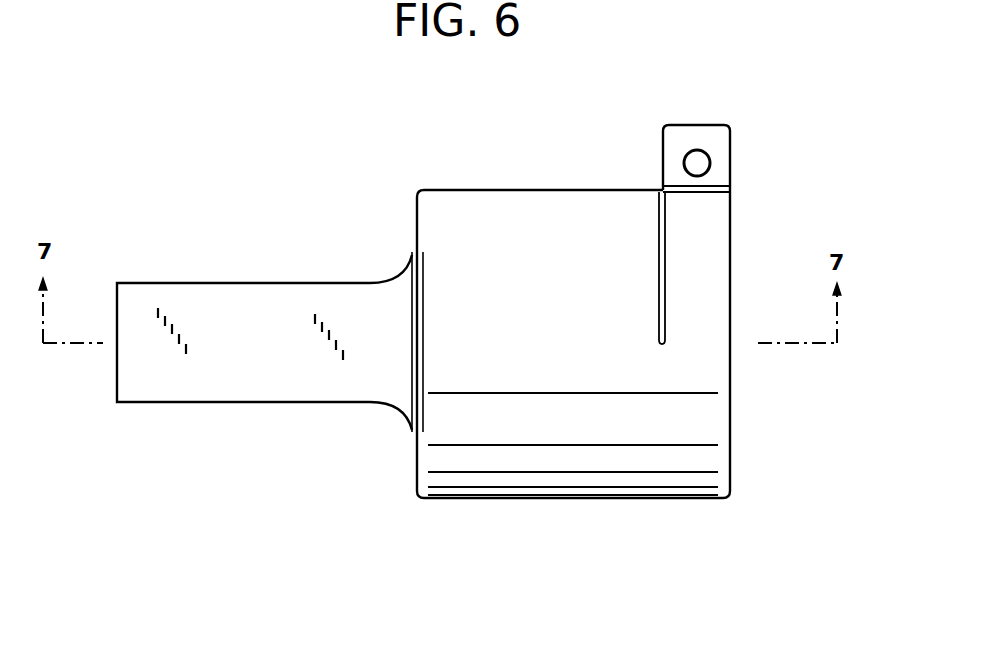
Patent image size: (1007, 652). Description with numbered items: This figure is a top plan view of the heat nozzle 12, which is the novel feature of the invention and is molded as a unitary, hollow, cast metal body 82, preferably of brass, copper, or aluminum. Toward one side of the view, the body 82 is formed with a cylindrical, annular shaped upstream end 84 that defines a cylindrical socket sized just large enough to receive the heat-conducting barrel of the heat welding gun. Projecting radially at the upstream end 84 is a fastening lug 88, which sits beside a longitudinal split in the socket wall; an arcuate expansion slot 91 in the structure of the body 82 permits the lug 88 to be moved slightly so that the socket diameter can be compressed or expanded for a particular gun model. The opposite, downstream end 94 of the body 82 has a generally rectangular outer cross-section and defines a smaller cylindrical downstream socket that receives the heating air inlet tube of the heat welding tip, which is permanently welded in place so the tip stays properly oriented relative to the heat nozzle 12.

The heat nozzle 12 is at (454, 283).
The downstream end 94 is at (238, 306).
The metal body 82 is at (515, 222).
The fastening lug 88 is at (693, 134).
The arcuate expansion slot 91 is at (659, 226).
The upstream end 84 is at (697, 412).